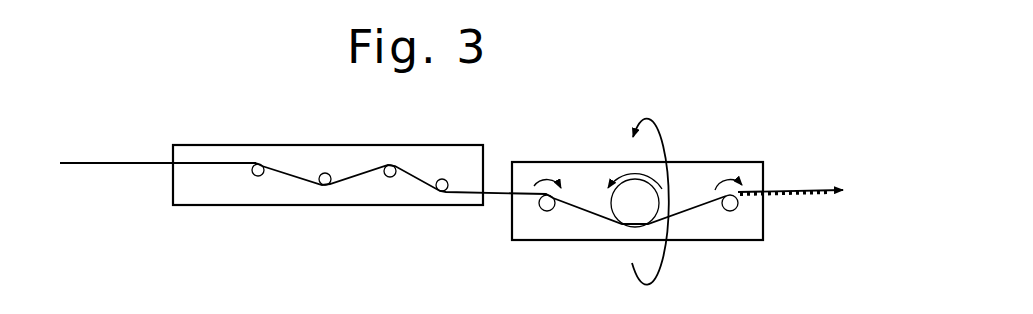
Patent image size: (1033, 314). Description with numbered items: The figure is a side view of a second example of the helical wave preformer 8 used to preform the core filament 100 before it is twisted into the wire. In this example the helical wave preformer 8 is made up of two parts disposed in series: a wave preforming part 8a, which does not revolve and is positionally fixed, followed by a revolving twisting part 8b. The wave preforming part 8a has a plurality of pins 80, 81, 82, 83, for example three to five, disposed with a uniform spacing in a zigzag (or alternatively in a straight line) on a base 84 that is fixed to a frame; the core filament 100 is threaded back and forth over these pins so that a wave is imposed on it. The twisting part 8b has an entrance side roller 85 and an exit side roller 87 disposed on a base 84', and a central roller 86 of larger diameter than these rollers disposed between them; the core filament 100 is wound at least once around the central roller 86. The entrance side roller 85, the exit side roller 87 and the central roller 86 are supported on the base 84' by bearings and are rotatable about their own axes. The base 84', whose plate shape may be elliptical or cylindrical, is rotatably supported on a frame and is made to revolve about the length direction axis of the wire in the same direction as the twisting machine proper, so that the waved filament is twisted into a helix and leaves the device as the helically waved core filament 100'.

The core filament 100 is at (158, 128).
The preformed core filament 100' is at (794, 155).
The helical wave preformer 8 is at (440, 206).
The wave preforming part 8a is at (338, 185).
The twisting part 8b is at (616, 202).
The pin 80 is at (260, 164).
The pin 81 is at (328, 173).
The pin 82 is at (395, 166).
The pin 83 is at (447, 180).
The base 84 is at (328, 212).
The base 84' is at (616, 238).
The entrance side roller 85 is at (547, 211).
The central roller 86 is at (628, 215).
The exit side roller 87 is at (730, 212).